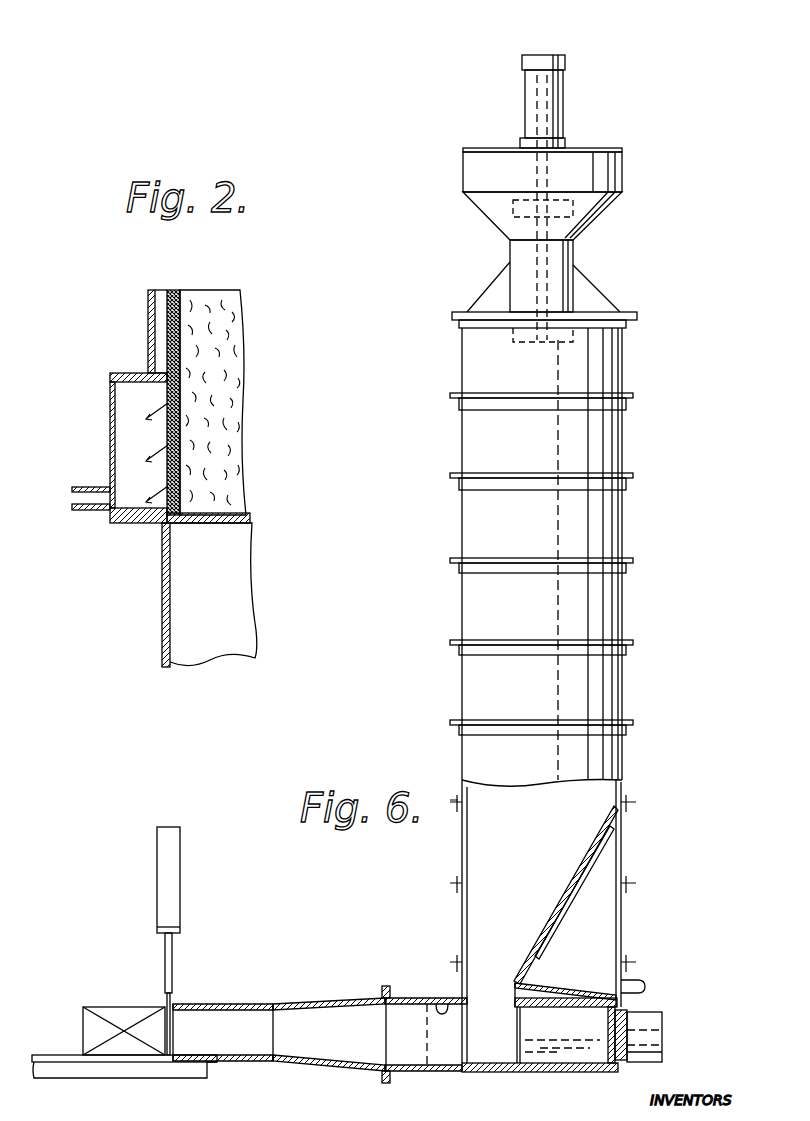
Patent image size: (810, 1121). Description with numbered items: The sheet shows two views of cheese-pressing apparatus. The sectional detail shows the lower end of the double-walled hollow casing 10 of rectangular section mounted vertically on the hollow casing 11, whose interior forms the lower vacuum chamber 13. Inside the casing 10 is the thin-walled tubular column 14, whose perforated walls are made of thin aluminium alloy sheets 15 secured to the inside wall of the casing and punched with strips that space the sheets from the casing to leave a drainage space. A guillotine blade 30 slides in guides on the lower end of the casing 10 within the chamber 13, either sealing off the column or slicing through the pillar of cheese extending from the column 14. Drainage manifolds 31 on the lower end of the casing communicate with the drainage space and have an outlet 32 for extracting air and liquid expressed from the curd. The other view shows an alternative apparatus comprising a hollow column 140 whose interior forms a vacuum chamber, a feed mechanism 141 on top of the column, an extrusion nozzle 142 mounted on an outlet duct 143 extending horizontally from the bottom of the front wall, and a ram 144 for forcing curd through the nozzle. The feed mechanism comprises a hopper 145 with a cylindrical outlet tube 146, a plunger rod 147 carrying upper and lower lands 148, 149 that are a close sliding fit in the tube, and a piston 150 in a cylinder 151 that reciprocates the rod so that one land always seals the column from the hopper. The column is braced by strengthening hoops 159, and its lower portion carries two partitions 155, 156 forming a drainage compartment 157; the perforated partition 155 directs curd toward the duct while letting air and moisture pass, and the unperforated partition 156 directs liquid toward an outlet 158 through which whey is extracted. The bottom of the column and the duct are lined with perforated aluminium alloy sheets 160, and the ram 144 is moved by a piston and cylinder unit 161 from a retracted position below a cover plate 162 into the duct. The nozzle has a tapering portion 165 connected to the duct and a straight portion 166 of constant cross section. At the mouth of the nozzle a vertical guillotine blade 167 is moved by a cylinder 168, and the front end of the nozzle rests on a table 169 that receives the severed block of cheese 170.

In FIG. 2, the double-walled hollow casing 10 is at (148, 307).
In FIG. 2, the hollow casing 11 is at (165, 580).
In FIG. 2, the lower vacuum chamber 13 is at (183, 625).
In FIG. 2, the thin-walled tubular column 14 is at (183, 357).
In FIG. 2, the thin aluminium alloy sheets 15 is at (182, 308).
In FIG. 2, the guillotine blade 30 is at (205, 525).
In FIG. 2, the drainage manifolds 31 is at (120, 392).
In FIG. 2, the outlet 32 is at (90, 498).
In FIG. 6, the hollow column 140 is at (472, 506).
In FIG. 6, the feed mechanism 141 is at (473, 226).
In FIG. 6, the extrusion nozzle 142 is at (273, 1004).
In FIG. 6, the outlet duct 143 is at (390, 992).
In FIG. 6, the ram 144 is at (567, 1043).
In FIG. 6, the hopper 145 is at (622, 172).
In FIG. 6, the cylindrical outlet tube 146 is at (510, 249).
In FIG. 6, the plunger rod 147 is at (550, 279).
In FIG. 6, the upper land 148 is at (567, 203).
In FIG. 6, the lower land 149 is at (510, 318).
In FIG. 6, the piston 150 is at (560, 76).
In FIG. 6, the cylinder 151 is at (562, 118).
In FIG. 6, the partition 155 is at (596, 848).
In FIG. 6, the partition 156 is at (580, 990).
In FIG. 6, the drainage compartment 157 is at (598, 882).
In FIG. 6, the outlet 158 is at (636, 988).
In FIG. 6, the strengthening hoops 159 is at (462, 641).
In FIG. 6, the perforated aluminium alloy sheets 160 is at (441, 1003).
In FIG. 6, the piston and cylinder unit 161 is at (656, 1022).
In FIG. 6, the cover plate 162 is at (546, 998).
In FIG. 6, the tapering portion 165 is at (327, 1001).
In FIG. 6, the trough 166 is at (218, 1004).
In FIG. 6, the vertical guillotine blade 167 is at (165, 998).
In FIG. 6, the cylinder 168 is at (165, 853).
In FIG. 6, the table 169 is at (195, 1063).
In FIG. 6, the block of cheese 170 is at (97, 1015).